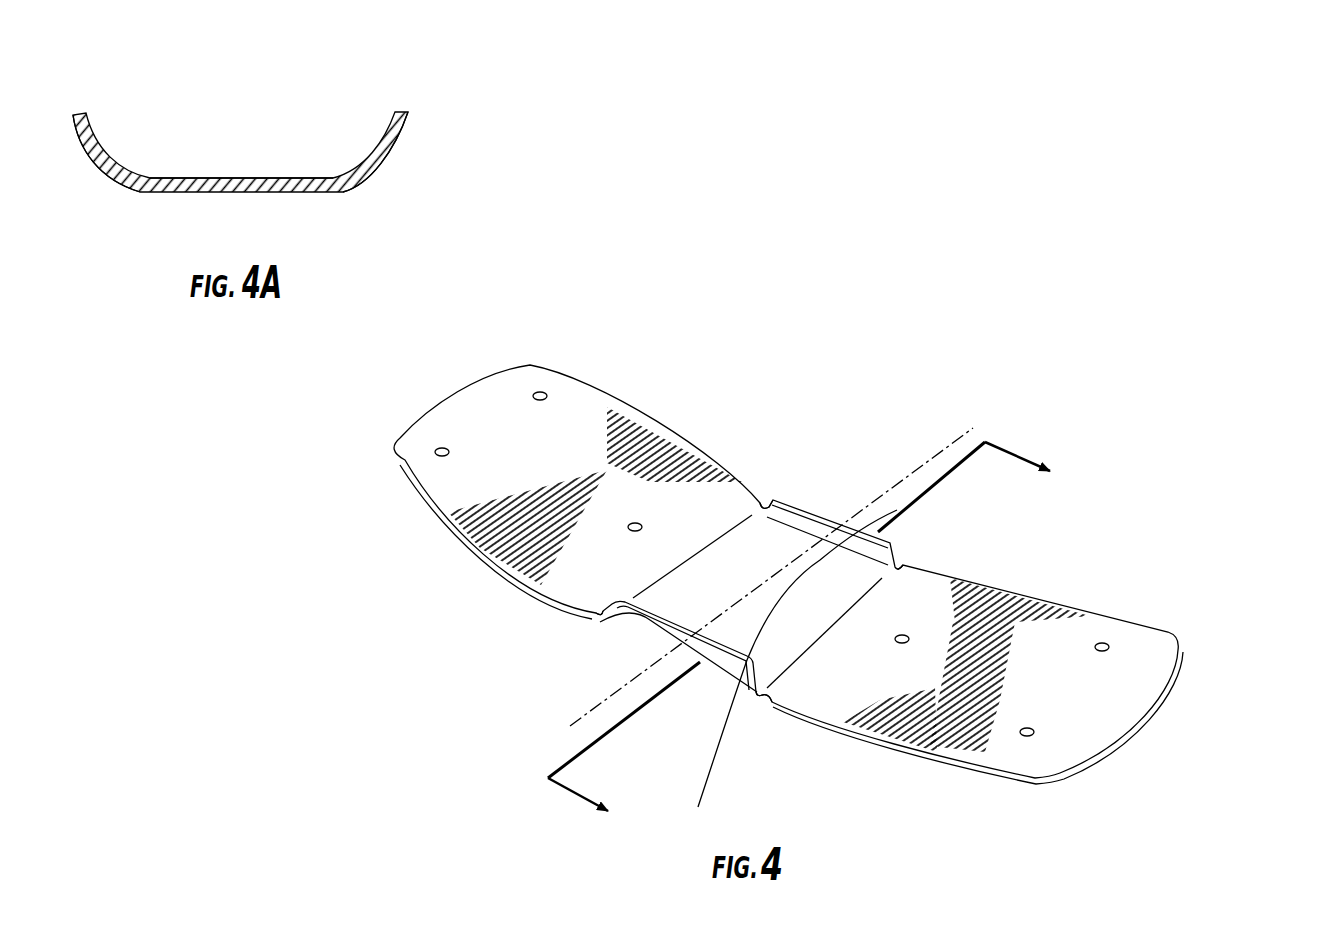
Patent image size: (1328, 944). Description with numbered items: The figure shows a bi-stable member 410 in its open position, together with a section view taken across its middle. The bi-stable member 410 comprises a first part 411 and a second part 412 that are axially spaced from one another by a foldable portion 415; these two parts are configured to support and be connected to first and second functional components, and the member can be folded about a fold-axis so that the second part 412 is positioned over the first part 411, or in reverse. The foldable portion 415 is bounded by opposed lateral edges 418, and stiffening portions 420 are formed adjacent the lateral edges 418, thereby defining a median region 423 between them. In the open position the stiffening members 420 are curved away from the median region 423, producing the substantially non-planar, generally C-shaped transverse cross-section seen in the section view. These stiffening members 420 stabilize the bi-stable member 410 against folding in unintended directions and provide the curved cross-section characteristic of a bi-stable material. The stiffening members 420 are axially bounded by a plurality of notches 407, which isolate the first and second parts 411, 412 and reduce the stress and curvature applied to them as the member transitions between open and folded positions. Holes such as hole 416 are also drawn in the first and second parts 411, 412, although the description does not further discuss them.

In FIG. 4, the bi-stable member 410 is at (750, 313).
In FIG. 4, the first part 411 is at (475, 412).
In FIG. 4, the second part 412 is at (1110, 690).
In FIG. 4, the foldable portion 415 is at (855, 472).
In FIG. 4A, the foldable portion 415 is at (150, 218).
In FIG. 4, the hole 416 is at (1105, 640).
In FIG. 4, the lateral edges 418 is at (768, 516).
In FIG. 4A, the lateral edges 418 is at (98, 133).
In FIG. 4, the stiffening portions 420 is at (705, 660).
In FIG. 4, the median region 423 is at (797, 627).
In FIG. 4A, the median region 423 is at (229, 177).
In FIG. 4, the notches 407 is at (767, 500).